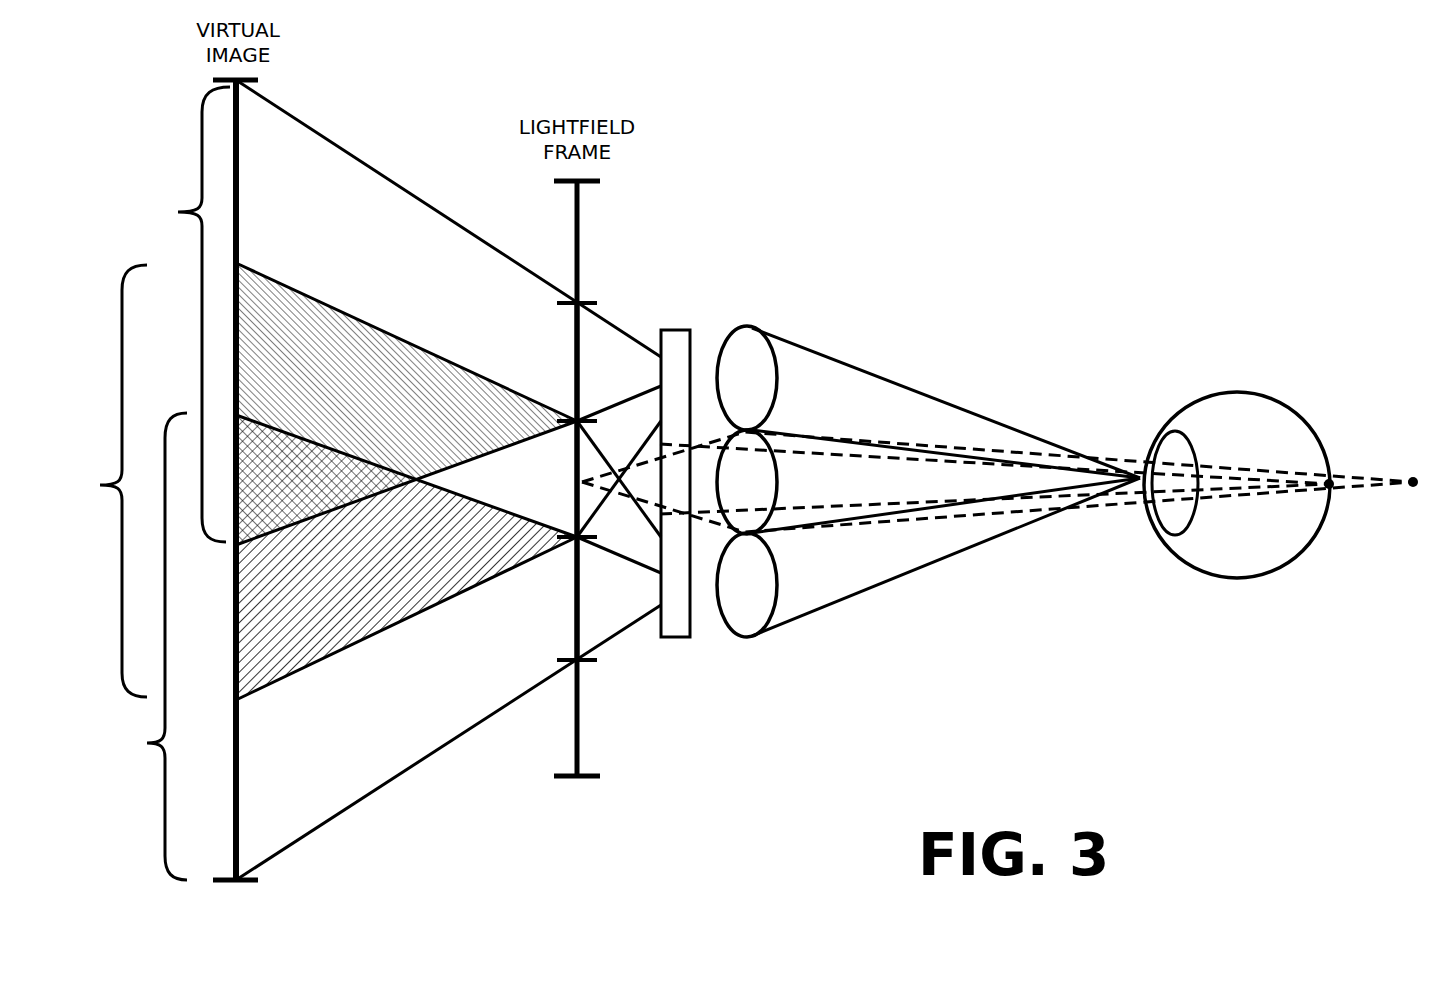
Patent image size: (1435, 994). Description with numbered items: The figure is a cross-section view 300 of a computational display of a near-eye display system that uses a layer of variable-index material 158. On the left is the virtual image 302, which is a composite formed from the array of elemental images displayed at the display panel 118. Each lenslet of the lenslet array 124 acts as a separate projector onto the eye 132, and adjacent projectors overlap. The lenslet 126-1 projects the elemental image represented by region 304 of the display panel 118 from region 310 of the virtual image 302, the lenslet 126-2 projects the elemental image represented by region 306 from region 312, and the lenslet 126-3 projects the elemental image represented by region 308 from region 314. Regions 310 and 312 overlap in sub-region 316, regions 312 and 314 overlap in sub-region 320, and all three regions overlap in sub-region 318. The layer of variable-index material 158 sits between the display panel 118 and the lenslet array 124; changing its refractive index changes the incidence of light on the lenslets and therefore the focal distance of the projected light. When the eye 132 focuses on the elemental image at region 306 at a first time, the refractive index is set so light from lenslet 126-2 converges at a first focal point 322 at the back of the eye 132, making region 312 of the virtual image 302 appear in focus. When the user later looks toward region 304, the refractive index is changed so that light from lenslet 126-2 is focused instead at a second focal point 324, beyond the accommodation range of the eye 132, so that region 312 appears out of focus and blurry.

The cross-section view 300 is at (966, 182).
The virtual image 302 is at (238, 898).
The region 304 is at (581, 376).
The region 306 is at (576, 485).
The region 308 is at (581, 603).
The region 310 is at (180, 314).
The region 312 is at (98, 481).
The region 314 is at (143, 646).
The sub-region 316 is at (400, 336).
The sub-region 318 is at (370, 466).
The sub-region 320 is at (412, 620).
The first focal point 322 is at (1332, 488).
The second focal point 324 is at (1410, 480).
The display panel 118 is at (591, 512).
The lenslet array 124 is at (780, 447).
The lenslet 126-1 is at (777, 392).
The lenslet 126-2 is at (777, 489).
The lenslet 126-3 is at (777, 576).
The eye 132 is at (1237, 392).
The layer of variable-index material 158 is at (673, 641).